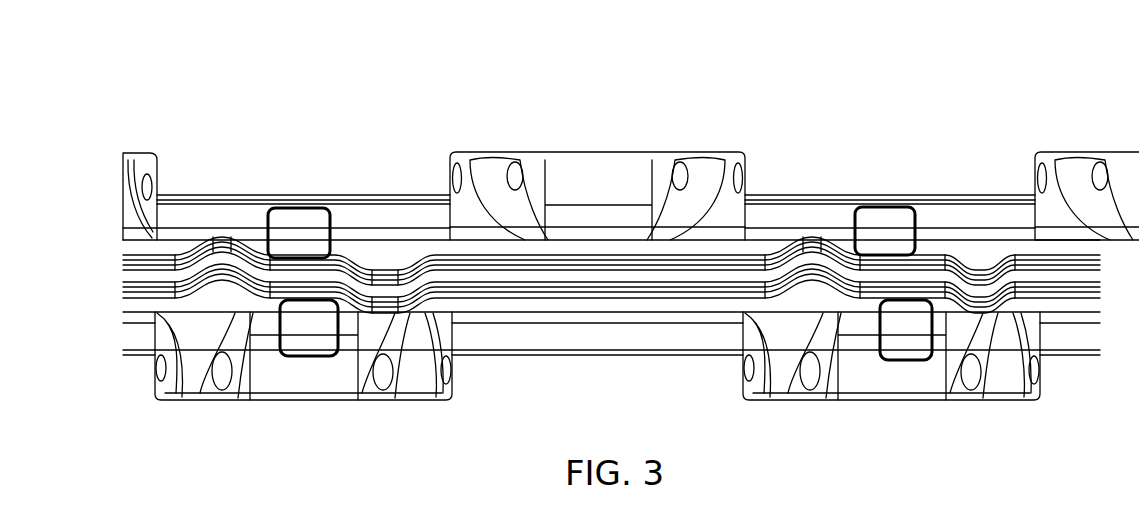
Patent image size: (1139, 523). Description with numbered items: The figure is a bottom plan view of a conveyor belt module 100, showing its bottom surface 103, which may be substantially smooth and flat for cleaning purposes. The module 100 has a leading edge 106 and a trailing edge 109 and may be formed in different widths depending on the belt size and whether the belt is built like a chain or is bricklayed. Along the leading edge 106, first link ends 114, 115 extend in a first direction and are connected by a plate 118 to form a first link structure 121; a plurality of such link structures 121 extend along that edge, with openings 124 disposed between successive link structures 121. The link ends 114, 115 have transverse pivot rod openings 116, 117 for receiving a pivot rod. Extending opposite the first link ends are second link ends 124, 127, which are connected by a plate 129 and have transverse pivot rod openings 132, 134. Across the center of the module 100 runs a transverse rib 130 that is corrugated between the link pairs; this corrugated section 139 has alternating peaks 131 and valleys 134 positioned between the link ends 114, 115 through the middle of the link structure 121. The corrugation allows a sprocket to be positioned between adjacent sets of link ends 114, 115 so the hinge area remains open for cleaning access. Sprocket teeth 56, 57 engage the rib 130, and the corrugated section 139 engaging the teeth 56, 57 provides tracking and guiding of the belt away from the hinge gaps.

The module 100 is at (600, 93).
The bottom surface 103 is at (372, 227).
The leading edge 106 is at (408, 415).
The trailing edge 109 is at (483, 128).
The first link end 114 is at (185, 388).
The first link end 115 is at (428, 388).
The transverse pivot rod opening 116 is at (160, 372).
The transverse pivot rod opening 117 is at (445, 372).
The plate 118 is at (305, 380).
The first link structure 121 is at (238, 422).
The second link end 124 is at (483, 183).
The second link end 127 is at (712, 172).
The plate 129 is at (607, 182).
The center transverse rib 130 is at (418, 262).
The peak 131 is at (222, 237).
The transverse pivot rod opening 132 is at (513, 173).
The transverse pivot rod opening 134 is at (385, 268).
The corrugated section 139 is at (250, 247).
The sprocket tooth 56 is at (285, 230).
The sprocket tooth 57 is at (318, 338).